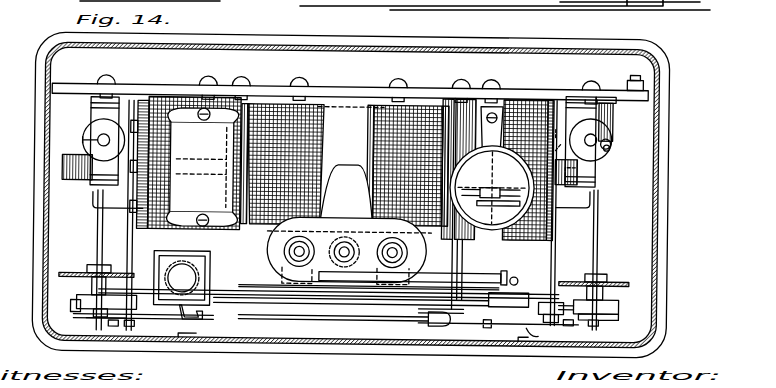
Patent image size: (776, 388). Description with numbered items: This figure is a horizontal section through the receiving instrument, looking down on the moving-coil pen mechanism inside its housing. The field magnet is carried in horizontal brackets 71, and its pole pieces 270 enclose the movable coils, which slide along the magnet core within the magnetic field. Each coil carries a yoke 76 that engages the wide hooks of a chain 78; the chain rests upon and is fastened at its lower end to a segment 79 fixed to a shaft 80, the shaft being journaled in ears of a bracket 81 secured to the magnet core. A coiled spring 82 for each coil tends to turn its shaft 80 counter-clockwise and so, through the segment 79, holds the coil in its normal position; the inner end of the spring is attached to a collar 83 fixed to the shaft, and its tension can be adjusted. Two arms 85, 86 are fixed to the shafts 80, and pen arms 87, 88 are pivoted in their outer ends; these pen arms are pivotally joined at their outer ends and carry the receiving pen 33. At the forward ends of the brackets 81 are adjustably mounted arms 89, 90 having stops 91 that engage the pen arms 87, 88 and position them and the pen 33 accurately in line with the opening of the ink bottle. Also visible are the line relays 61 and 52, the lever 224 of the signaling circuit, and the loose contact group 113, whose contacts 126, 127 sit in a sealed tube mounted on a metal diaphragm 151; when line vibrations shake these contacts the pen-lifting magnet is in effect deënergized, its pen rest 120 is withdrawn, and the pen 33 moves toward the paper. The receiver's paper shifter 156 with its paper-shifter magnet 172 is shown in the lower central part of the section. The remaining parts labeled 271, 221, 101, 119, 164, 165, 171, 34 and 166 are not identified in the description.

The horizontal brackets 71 is at (250, 108).
The relay 61 is at (88, 128).
The chain 78 is at (62, 168).
The yoke 76 is at (93, 208).
The shaft 80 is at (98, 245).
The collar 83 is at (95, 268).
The coiled spring 82 is at (72, 276).
The arm 86 is at (78, 302).
The stops 91 is at (75, 316).
The adjustably mounted arm 90 is at (100, 320).
The pen arm 88 is at (167, 304).
The receiving pen 33 is at (190, 316).
The left coil 271 is at (160, 106).
The cover plate 221 is at (202, 167).
The main coil 101 is at (345, 165).
The paper shifter 156 is at (349, 246).
The paper shifter magnet 172 is at (270, 258).
The magnet pole pieces 270 is at (530, 110).
The metal diaphragm 151 is at (492, 188).
The contact 127 is at (491, 189).
The loose contact group 113 is at (520, 240).
The right relay 52 is at (612, 150).
The segment 79 is at (606, 176).
The contact 126 is at (567, 195).
The lever 224 is at (648, 135).
The bracket 81 is at (562, 266).
The rod 119 is at (478, 274).
The pin 164 is at (527, 283).
The shaft 165 is at (285, 300).
The shaft 171 is at (335, 306).
The pen rest 120 is at (320, 305).
The rod 34 is at (370, 300).
The pen arm 87 is at (390, 318).
The rod 166 is at (398, 312).
The arm 85 is at (538, 324).
The adjustably mounted arm 89 is at (538, 336).